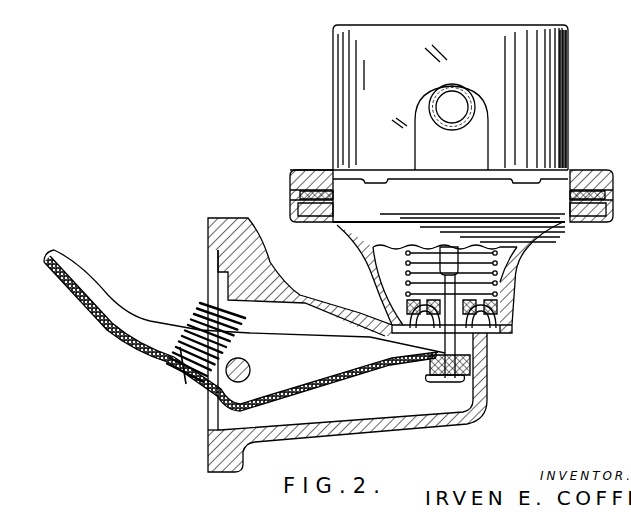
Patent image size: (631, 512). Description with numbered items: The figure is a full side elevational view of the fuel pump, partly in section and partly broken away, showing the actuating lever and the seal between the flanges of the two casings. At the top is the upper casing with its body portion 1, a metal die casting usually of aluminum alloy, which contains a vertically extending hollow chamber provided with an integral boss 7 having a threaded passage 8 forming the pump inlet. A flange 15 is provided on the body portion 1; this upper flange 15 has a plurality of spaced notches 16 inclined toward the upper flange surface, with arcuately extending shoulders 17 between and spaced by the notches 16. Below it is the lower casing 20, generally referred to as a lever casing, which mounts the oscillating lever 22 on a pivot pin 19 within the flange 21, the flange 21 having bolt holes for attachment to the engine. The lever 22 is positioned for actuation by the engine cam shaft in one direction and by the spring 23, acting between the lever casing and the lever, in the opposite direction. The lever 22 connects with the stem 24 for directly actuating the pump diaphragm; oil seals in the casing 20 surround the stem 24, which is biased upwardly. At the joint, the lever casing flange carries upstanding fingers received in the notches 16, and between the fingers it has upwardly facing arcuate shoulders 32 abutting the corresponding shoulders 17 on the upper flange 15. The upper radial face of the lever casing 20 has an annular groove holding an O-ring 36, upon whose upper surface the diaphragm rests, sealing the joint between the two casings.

The body portion 1 is at (333, 78).
The boss 7 is at (466, 82).
The threaded passage 8 is at (436, 107).
The flange 15 is at (305, 168).
The notches 16 is at (298, 195).
The shoulders 17 is at (398, 172).
The pivot pin 19 is at (250, 366).
The lower casing 20 is at (514, 300).
The flange 21 is at (250, 450).
The oscillating lever 22 is at (130, 346).
The spring 23 is at (208, 300).
The stem 24 is at (470, 333).
The arcuate shoulders 32 is at (430, 180).
The O-ring 36 is at (312, 222).